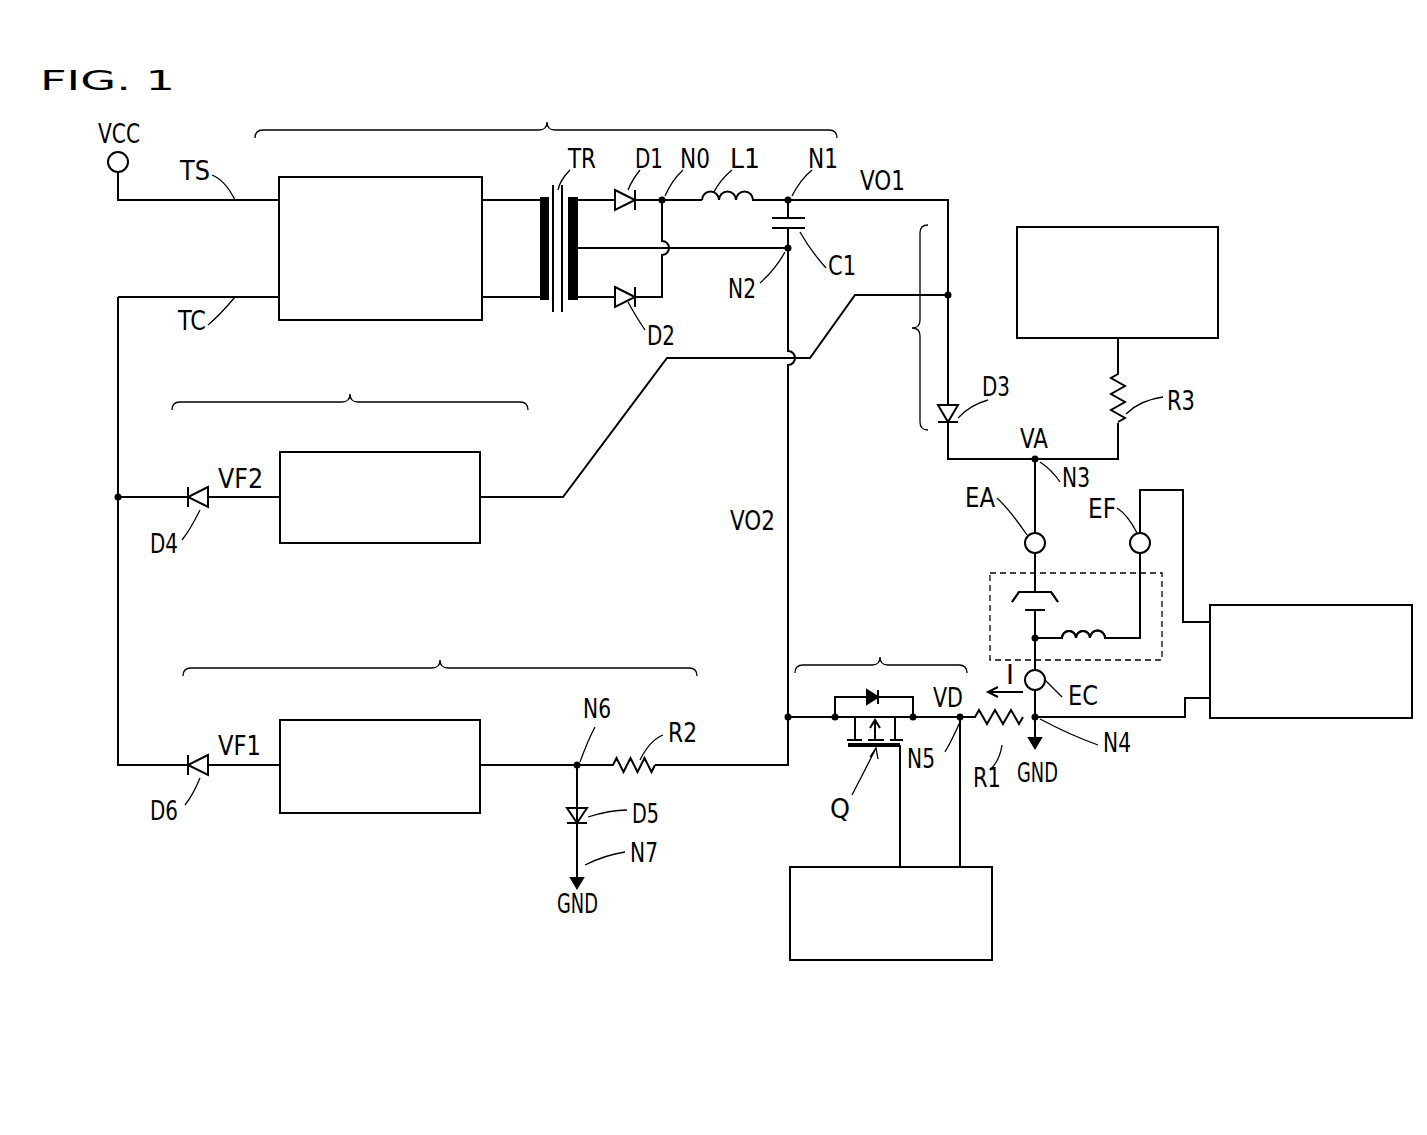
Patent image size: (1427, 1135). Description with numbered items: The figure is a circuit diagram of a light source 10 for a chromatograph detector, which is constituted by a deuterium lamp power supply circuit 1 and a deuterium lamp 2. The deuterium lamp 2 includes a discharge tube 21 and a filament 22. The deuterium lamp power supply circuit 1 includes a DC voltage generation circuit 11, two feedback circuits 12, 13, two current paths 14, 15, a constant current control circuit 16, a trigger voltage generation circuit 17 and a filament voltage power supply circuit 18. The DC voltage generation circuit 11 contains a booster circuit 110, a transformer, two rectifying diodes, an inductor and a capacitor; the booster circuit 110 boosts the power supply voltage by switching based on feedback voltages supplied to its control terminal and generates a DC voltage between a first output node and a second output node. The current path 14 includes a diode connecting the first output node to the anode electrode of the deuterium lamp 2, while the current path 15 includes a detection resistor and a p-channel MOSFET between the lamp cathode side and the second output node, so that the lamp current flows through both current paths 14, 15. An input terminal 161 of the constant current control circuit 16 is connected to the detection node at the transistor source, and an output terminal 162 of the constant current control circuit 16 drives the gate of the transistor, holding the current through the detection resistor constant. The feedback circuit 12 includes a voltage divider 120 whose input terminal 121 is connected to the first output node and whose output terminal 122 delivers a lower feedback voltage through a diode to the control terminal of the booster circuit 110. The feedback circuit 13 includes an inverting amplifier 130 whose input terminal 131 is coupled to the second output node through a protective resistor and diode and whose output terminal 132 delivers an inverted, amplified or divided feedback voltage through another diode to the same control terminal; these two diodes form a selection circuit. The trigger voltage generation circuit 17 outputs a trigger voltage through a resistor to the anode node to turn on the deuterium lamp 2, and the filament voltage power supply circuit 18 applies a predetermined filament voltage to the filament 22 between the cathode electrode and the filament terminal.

The deuterium lamp power supply circuit 1 is at (985, 160).
The light source 10 is at (1317, 157).
The DC voltage generation circuit 11 is at (546, 114).
The booster circuit 110 is at (322, 177).
The feedback circuit 12 is at (350, 387).
The voltage divider 120 is at (322, 452).
The input terminal of the voltage divider 121 is at (496, 497).
The output terminal of the voltage divider 122 is at (267, 500).
The feedback circuit 13 is at (440, 652).
The inverting amplifier 130 is at (322, 720).
The input terminal of the inverting amplifier 131 is at (500, 765).
The output terminal of the inverting amplifier 132 is at (266, 770).
The current path 14 is at (901, 327).
The current path 15 is at (881, 646).
The constant current control circuit 16 is at (822, 866).
The input terminal of the constant current control circuit 161 is at (962, 848).
The output terminal of the constant current control circuit 162 is at (903, 853).
The trigger voltage generation circuit 17 is at (1037, 227).
The filament voltage power supply circuit 18 is at (1225, 605).
The deuterium lamp 2 is at (1000, 568).
The discharge tube 21 is at (1045, 590).
The filament 22 is at (1095, 650).